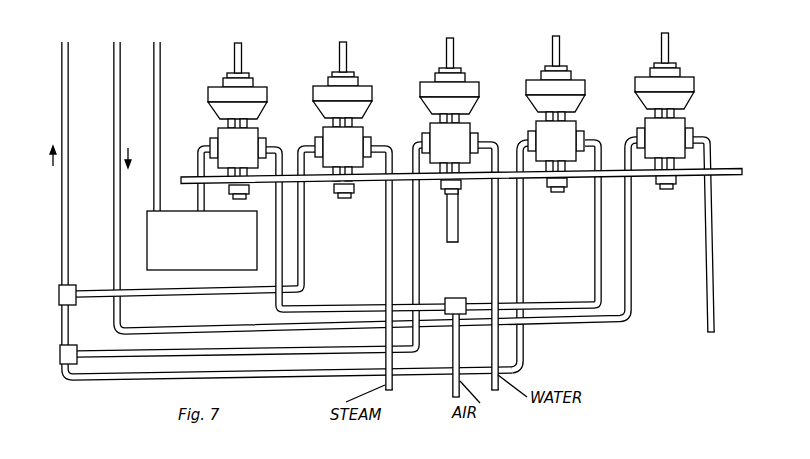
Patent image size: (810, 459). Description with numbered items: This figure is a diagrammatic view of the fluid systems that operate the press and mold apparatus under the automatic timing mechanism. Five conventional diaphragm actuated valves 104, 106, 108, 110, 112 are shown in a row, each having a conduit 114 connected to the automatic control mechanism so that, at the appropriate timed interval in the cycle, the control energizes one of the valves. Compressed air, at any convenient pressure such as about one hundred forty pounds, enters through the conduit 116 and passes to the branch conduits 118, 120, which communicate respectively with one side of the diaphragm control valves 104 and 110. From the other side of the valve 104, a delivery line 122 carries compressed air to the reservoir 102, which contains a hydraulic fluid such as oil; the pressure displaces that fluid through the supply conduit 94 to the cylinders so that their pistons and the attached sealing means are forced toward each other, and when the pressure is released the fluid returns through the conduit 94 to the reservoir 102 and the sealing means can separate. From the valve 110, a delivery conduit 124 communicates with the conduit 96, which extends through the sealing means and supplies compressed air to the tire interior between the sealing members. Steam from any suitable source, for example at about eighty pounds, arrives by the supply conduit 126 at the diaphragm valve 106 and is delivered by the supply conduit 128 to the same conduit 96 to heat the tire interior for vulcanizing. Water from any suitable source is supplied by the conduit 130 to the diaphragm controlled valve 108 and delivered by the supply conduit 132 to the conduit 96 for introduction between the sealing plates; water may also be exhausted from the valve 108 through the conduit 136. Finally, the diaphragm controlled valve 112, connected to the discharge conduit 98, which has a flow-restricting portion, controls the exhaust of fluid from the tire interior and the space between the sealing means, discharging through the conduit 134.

The supply conduit 94 is at (161, 47).
The conduit 96 is at (63, 216).
The conduit 98 is at (118, 206).
The reservoir 102 is at (235, 263).
The diaphragm actuated valve 104 is at (250, 97).
The diaphragm valve 106 is at (355, 96).
The diaphragm controlled valve 108 is at (460, 92).
The diaphragm operated air control valve 110 is at (568, 90).
The diaphragm controlled valve 112 is at (680, 87).
The conduit 114 is at (240, 57).
The conduit 116 is at (453, 383).
The branch conduit 118 is at (321, 308).
The branch conduit 120 is at (564, 305).
The delivery line 122 is at (197, 153).
The delivery conduit 124 is at (527, 246).
The supply conduit 126 is at (386, 212).
The supply conduit 128 is at (305, 240).
The conduit 130 is at (492, 238).
The supply conduit 132 is at (420, 271).
The conduit 134 is at (707, 233).
The conduit 136 is at (452, 222).